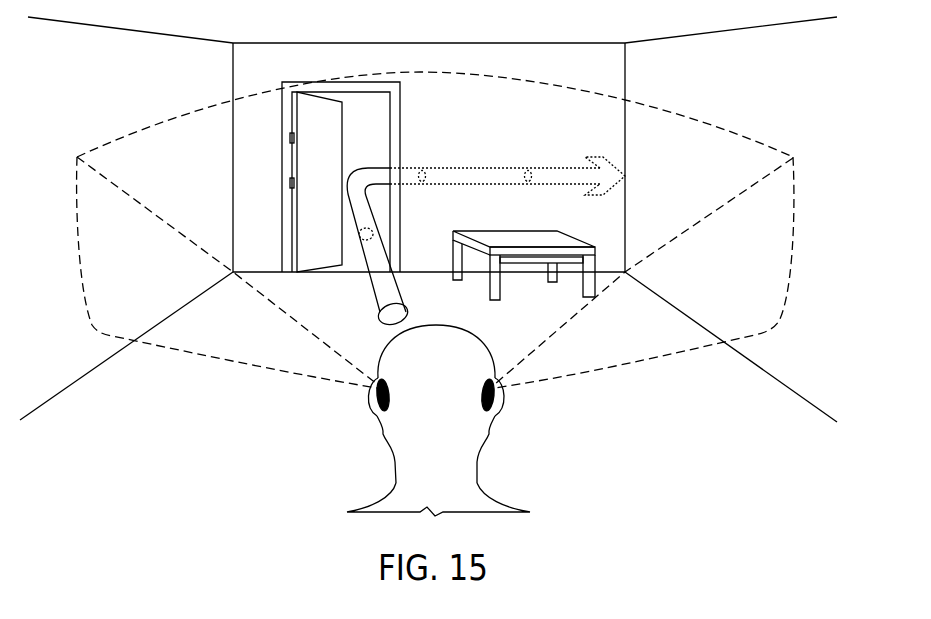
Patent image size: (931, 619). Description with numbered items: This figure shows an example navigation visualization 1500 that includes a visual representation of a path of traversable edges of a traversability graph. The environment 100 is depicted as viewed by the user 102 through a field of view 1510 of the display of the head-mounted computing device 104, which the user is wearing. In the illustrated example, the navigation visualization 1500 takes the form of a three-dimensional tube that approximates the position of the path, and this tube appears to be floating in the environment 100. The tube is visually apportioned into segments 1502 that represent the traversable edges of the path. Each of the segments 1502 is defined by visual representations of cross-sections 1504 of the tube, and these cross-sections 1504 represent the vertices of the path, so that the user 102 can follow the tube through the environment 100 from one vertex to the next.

The environment 100 is at (584, 26).
The user 102 is at (438, 420).
The head-mounted computing device 104 is at (706, 105).
The navigation visualization 1500 is at (463, 143).
The segments 1502 is at (367, 285).
The cross-sections 1504 is at (373, 233).
The field of view 1510 is at (235, 371).